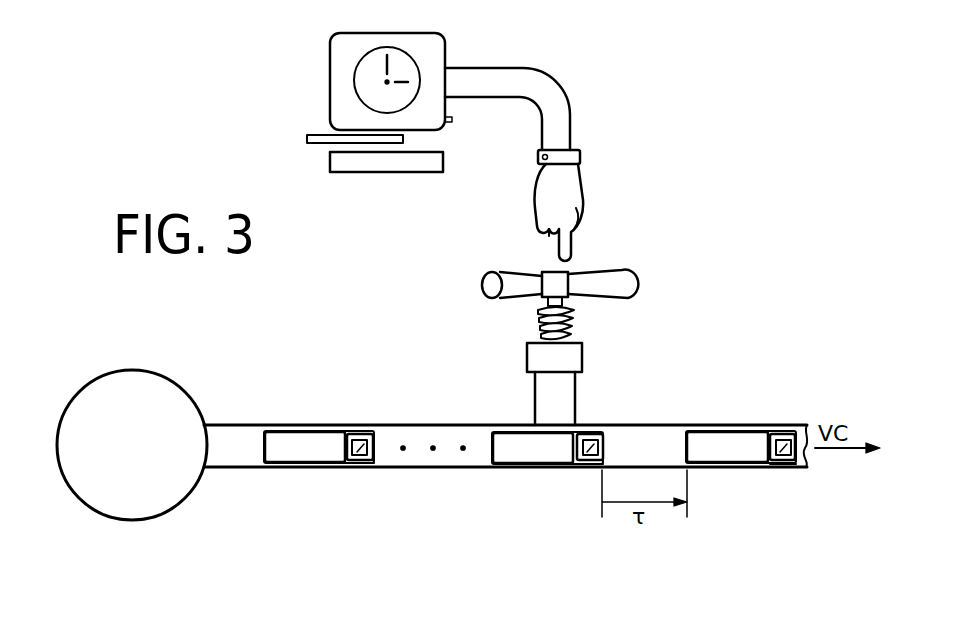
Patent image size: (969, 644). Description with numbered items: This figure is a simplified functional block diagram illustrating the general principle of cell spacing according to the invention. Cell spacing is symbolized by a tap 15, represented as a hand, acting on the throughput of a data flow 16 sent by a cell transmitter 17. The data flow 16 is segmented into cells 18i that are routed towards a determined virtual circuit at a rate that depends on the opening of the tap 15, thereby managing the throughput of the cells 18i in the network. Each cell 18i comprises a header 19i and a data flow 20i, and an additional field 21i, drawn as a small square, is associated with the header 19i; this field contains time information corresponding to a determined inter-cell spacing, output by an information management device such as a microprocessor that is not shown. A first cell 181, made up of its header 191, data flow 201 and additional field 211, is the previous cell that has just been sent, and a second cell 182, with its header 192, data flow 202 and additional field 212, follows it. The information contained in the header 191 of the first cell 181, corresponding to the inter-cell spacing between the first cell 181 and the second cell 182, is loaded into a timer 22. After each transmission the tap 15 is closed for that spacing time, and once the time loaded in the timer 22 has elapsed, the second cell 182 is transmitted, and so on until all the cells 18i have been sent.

The tap 15 is at (633, 272).
The data flow 16 is at (222, 425).
The cell transmitter 17 is at (80, 396).
The timer 22 is at (330, 80).
The cell 18i is at (300, 475).
The header 19i is at (353, 468).
The data flow 20i is at (292, 443).
The additional field 21i is at (370, 440).
The second cell 182 is at (526, 476).
The header 192 is at (585, 468).
The data flow 202 is at (508, 445).
The additional field 212 is at (602, 440).
The first cell 181 is at (730, 475).
The header 191 is at (778, 468).
The data flow 201 is at (718, 445).
The additional field 211 is at (790, 438).